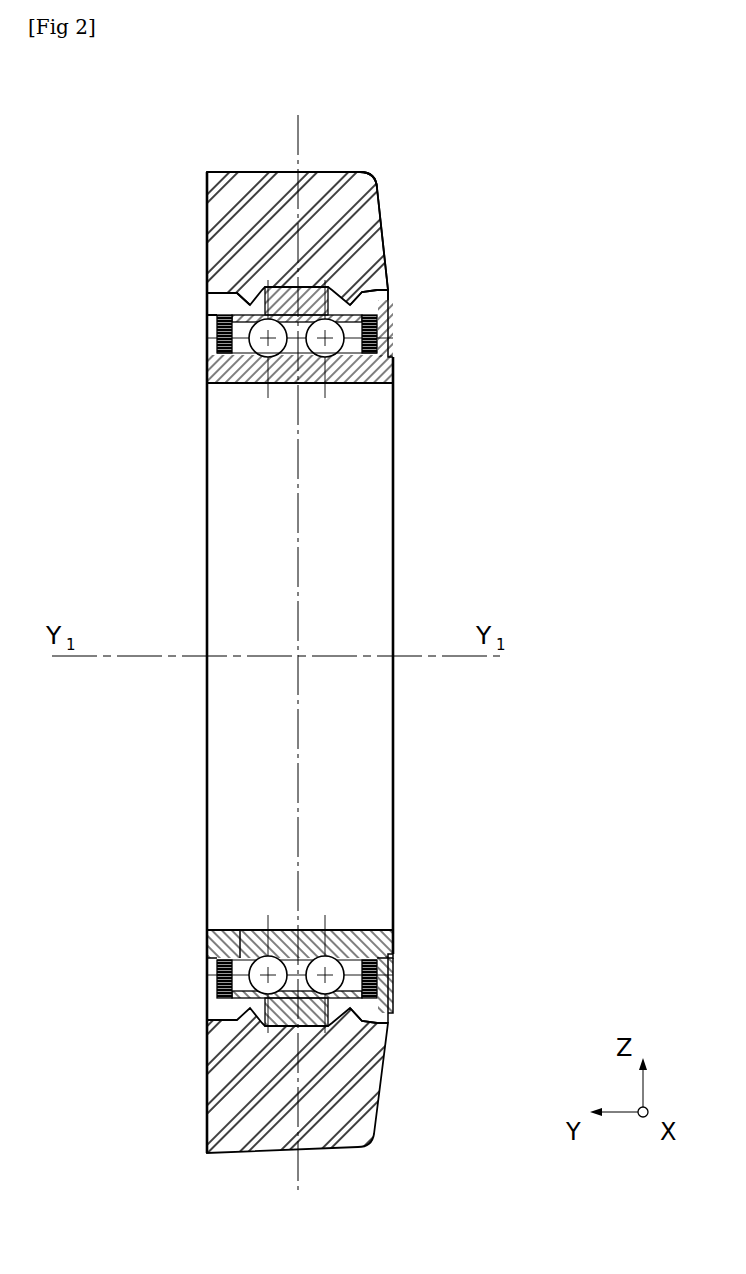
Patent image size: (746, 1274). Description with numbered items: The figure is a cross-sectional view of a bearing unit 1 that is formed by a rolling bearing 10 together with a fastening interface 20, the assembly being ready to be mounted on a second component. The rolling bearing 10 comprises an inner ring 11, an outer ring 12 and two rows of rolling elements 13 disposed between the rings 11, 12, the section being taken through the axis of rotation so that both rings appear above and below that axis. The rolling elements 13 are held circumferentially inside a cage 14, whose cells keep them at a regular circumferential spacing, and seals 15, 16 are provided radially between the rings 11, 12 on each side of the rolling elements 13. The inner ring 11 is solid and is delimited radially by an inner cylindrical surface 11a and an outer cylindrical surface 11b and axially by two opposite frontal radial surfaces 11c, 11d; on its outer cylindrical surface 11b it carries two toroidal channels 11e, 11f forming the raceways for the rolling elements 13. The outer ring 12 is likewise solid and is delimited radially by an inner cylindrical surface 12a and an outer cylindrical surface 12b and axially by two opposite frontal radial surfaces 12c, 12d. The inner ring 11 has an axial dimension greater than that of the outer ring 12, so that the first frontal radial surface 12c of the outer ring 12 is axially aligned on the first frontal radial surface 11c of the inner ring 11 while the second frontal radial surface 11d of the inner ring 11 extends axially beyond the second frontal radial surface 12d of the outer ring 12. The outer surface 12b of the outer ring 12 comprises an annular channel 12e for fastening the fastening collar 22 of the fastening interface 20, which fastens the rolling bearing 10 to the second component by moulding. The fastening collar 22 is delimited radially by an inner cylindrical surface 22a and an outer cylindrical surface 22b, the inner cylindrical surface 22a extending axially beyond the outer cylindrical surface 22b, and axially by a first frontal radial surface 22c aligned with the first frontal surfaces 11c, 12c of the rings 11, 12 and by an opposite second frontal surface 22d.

The bearing unit 1 is at (412, 155).
The rolling bearing 10 is at (458, 352).
The inner ring 11 is at (396, 368).
The inner cylindrical surface 11a is at (234, 926).
The outer cylindrical surface 11b is at (393, 978).
The first frontal radial surface 11c is at (207, 950).
The second frontal radial surface 11d is at (393, 942).
The toroidal channel 11e is at (208, 980).
The toroidal channel 11f is at (390, 1010).
The outer ring 12 is at (210, 1018).
The inner cylindrical surface 12a is at (205, 1055).
The outer cylindrical surface 12b is at (388, 272).
The first frontal radial surface 12c is at (207, 312).
The second frontal radial surface 12d is at (390, 300).
The annular channel 12e is at (207, 278).
The rolling elements 13 is at (262, 392).
The cage 14 is at (335, 280).
The seal 15 is at (207, 340).
The seal 16 is at (384, 338).
The fastening interface 20 is at (207, 172).
The fastening collar 22 is at (336, 172).
The inner cylindrical surface 22a is at (376, 193).
The outer cylindrical surface 22b is at (272, 172).
The first frontal radial surface 22c is at (205, 200).
The second frontal surface 22d is at (382, 176).